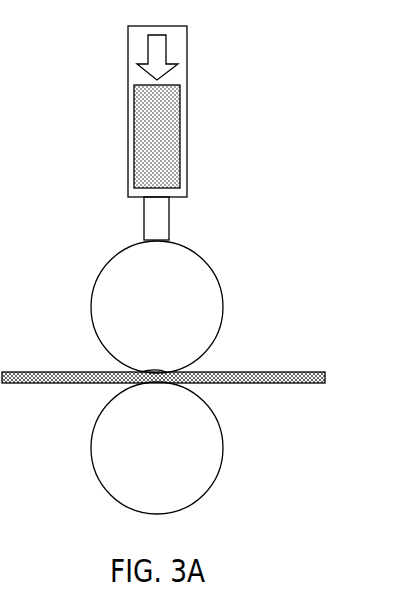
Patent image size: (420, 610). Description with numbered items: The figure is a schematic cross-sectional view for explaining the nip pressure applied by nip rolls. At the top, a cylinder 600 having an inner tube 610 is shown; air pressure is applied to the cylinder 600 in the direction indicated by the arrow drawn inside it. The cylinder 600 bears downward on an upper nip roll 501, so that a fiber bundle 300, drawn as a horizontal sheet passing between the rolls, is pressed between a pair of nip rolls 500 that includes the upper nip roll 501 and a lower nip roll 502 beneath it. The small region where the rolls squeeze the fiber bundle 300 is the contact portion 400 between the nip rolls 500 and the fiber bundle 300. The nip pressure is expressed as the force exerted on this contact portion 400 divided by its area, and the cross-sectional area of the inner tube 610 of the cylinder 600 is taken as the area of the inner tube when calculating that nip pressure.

The cylinder 600 is at (187, 55).
The inner tube 610 is at (170, 144).
The pair of nip rolls 500 is at (222, 377).
The upper nip roll 501 is at (224, 305).
The lower nip roll 502 is at (215, 413).
The fiber bundle 300 is at (272, 383).
The contact portion 400 is at (152, 372).